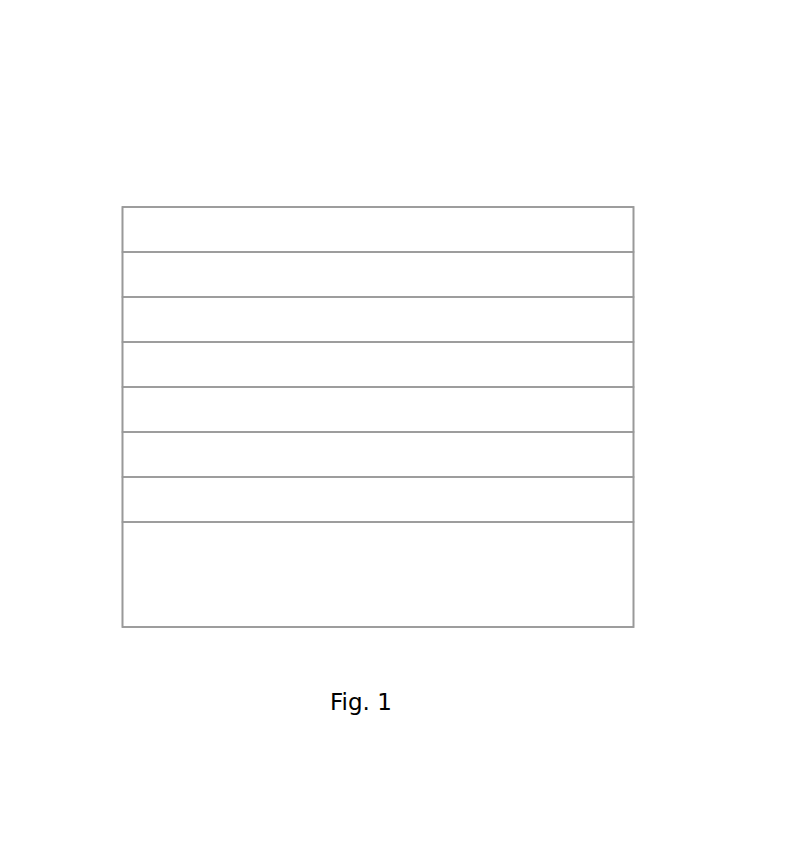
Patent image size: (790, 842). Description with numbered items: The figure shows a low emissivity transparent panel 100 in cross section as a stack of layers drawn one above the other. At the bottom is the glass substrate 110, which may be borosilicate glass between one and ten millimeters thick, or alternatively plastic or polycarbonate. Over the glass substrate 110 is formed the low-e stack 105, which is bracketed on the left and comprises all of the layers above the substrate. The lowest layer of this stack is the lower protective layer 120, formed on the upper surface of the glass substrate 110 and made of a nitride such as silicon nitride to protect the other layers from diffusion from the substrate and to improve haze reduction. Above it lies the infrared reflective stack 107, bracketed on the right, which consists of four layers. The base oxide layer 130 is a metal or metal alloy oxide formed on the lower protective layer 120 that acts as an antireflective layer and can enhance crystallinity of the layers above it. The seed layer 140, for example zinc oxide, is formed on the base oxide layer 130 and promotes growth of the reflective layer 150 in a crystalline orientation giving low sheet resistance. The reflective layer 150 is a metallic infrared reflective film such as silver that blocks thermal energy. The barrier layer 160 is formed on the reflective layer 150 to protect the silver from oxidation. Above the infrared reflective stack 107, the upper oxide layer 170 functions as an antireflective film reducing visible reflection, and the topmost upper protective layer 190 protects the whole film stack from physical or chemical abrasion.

The low emissivity transparent panel 100 is at (106, 146).
The low emissivity stack 105 is at (115, 207).
The infrared reflective stack 107 is at (648, 297).
The glass substrate 110 is at (358, 585).
The lower protective layer 120 is at (358, 510).
The base oxide layer 130 is at (358, 465).
The seed layer 140 is at (358, 420).
The reflective layer 150 is at (358, 375).
The barrier layer 160 is at (358, 330).
The upper oxide layer 170 is at (358, 285).
The upper protective layer 190 is at (358, 240).